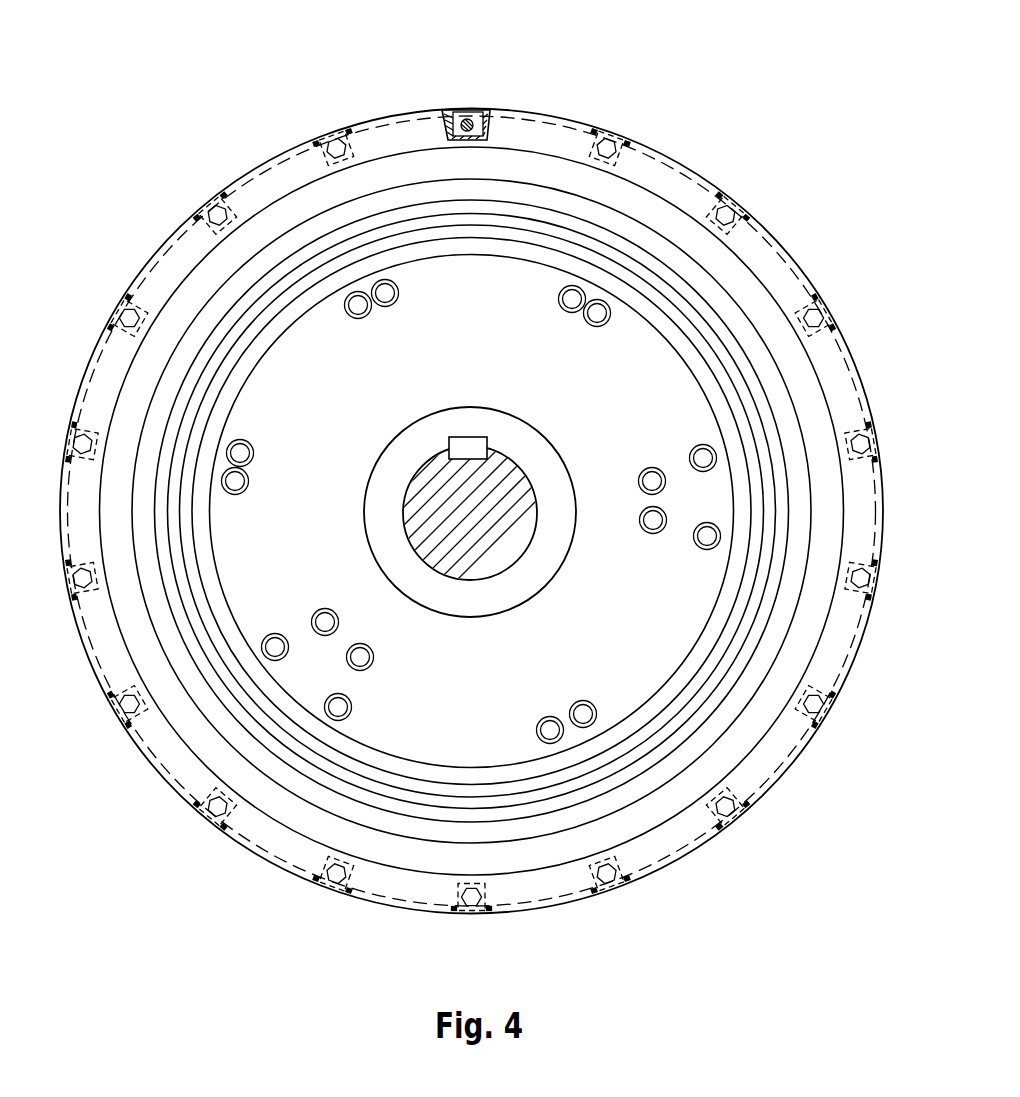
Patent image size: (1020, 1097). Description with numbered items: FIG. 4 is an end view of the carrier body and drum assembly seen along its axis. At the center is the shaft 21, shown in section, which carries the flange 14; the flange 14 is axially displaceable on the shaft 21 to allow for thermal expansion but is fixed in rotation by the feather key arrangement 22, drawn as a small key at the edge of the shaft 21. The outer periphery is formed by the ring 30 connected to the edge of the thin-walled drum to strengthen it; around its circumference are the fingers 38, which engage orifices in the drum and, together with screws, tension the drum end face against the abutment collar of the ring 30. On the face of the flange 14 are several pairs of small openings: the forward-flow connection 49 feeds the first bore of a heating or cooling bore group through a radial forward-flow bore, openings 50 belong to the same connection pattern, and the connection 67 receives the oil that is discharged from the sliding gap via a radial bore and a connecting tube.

The flange 14 is at (498, 277).
The shaft 21 is at (522, 492).
The feather key arrangement 22 is at (483, 442).
The ring 30 is at (383, 140).
The finger 38 is at (467, 112).
The forward-flow connection 49 is at (360, 310).
The bore 50 is at (393, 303).
The connection 67 is at (652, 477).